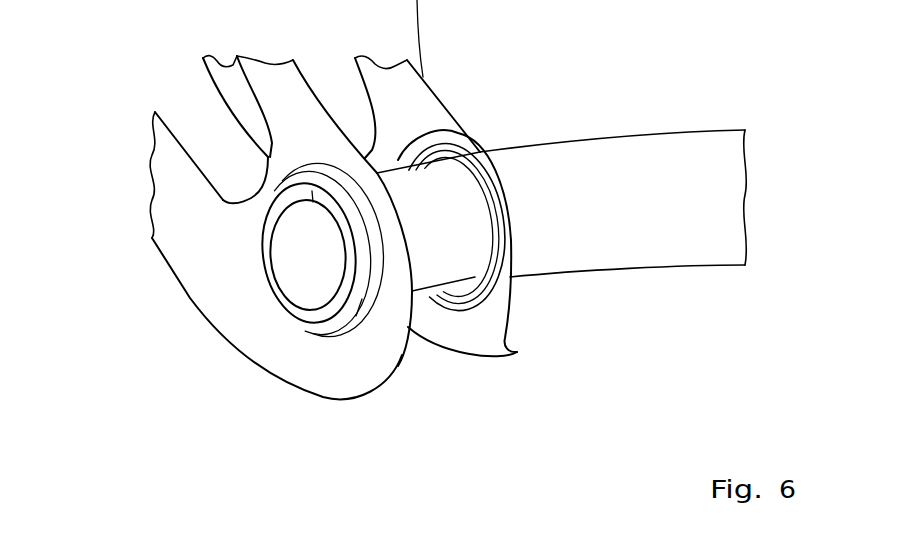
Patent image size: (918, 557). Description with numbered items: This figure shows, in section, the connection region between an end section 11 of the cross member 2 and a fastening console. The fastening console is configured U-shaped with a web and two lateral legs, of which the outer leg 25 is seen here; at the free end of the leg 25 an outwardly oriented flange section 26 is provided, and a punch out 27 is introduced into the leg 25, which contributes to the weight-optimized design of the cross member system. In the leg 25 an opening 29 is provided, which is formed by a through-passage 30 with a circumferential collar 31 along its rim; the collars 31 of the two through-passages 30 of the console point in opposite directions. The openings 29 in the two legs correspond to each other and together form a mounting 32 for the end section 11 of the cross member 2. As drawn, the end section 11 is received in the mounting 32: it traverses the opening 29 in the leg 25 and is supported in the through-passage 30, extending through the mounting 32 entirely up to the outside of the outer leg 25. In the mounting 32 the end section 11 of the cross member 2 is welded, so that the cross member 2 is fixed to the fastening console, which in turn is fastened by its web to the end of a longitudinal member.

The cross member 2 is at (688, 132).
The end section 11 is at (475, 278).
The leg 25 is at (180, 202).
The flange section 26 is at (245, 300).
The punch out 27 is at (247, 96).
The opening 29 is at (505, 292).
The through-passage 30 is at (302, 316).
The circumferential collar 31 is at (362, 298).
The mounting 32 is at (422, 353).